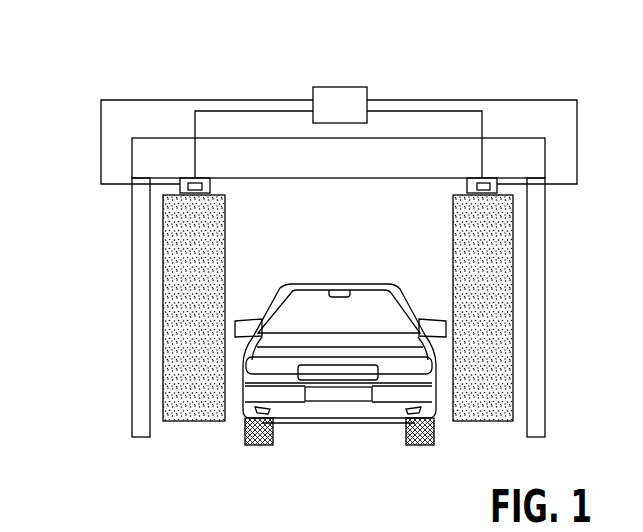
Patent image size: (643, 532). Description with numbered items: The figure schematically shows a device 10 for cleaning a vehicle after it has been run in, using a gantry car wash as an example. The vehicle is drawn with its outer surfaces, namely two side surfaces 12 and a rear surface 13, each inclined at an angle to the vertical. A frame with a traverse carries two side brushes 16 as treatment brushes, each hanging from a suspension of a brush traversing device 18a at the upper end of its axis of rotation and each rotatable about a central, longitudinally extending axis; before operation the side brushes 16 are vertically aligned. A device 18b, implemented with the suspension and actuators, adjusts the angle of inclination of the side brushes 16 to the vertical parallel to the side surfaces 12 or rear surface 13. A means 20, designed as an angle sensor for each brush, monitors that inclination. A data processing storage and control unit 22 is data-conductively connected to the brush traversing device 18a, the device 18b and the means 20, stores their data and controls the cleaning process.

The device for cleaning a vehicle 10 is at (87, 69).
The side surface 12 is at (340, 339).
The rear surface 13 is at (355, 306).
The side brush 16 is at (163, 316).
The brush traversing device 18a is at (210, 187).
The device for adjusting the angle of inclination 18b is at (467, 186).
The means for monitoring the angle of inclination 20 is at (180, 188).
The data processing storage and control unit 22 is at (312, 88).